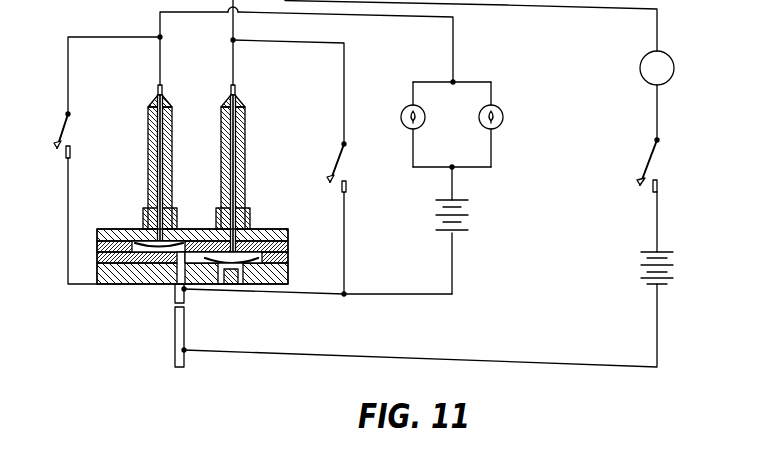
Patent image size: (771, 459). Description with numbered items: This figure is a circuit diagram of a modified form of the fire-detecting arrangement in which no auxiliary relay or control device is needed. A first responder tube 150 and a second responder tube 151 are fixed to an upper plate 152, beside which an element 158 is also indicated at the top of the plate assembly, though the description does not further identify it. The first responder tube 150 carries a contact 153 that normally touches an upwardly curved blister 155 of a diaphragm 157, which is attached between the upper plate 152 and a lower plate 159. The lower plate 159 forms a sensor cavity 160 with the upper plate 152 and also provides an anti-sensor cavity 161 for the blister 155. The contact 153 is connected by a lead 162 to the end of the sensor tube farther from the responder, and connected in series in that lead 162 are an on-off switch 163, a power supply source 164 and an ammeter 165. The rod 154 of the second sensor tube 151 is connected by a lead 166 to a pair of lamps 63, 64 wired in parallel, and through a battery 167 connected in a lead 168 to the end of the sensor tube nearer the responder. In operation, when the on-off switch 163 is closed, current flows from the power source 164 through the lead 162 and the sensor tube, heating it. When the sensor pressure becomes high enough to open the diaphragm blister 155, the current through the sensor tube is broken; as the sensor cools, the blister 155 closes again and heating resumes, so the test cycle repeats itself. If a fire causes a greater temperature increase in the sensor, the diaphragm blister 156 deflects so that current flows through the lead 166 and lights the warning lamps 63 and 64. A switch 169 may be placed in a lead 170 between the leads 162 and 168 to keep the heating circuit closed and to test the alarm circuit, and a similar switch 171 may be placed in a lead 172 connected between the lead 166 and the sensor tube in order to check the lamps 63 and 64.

The lamp 63 is at (425, 117).
The lamp 64 is at (503, 117).
The first responder tube 150 is at (245, 162).
The second responder tube 151 is at (172, 162).
The upper plate 152 is at (276, 236).
The contact 153 is at (232, 199).
The rod 154 is at (157, 192).
The blister 155 is at (244, 262).
The diaphragm blister 156 is at (152, 249).
The diaphragm 157 is at (288, 270).
The housing top layer 158 is at (133, 231).
The lower plate 159 is at (103, 283).
The sensor cavity 160 is at (166, 250).
The anti-sensor cavity 161 is at (218, 261).
The lead 162 is at (506, 6).
The on-off switch 163 is at (650, 175).
The power supply source 164 is at (673, 272).
The ammeter 165 is at (674, 70).
The lead 166 is at (160, 26).
The battery 167 is at (468, 222).
The lead 168 is at (414, 296).
The switch 169 is at (336, 149).
The lead 170 is at (345, 228).
The switch 171 is at (74, 126).
The lead 172 is at (70, 68).